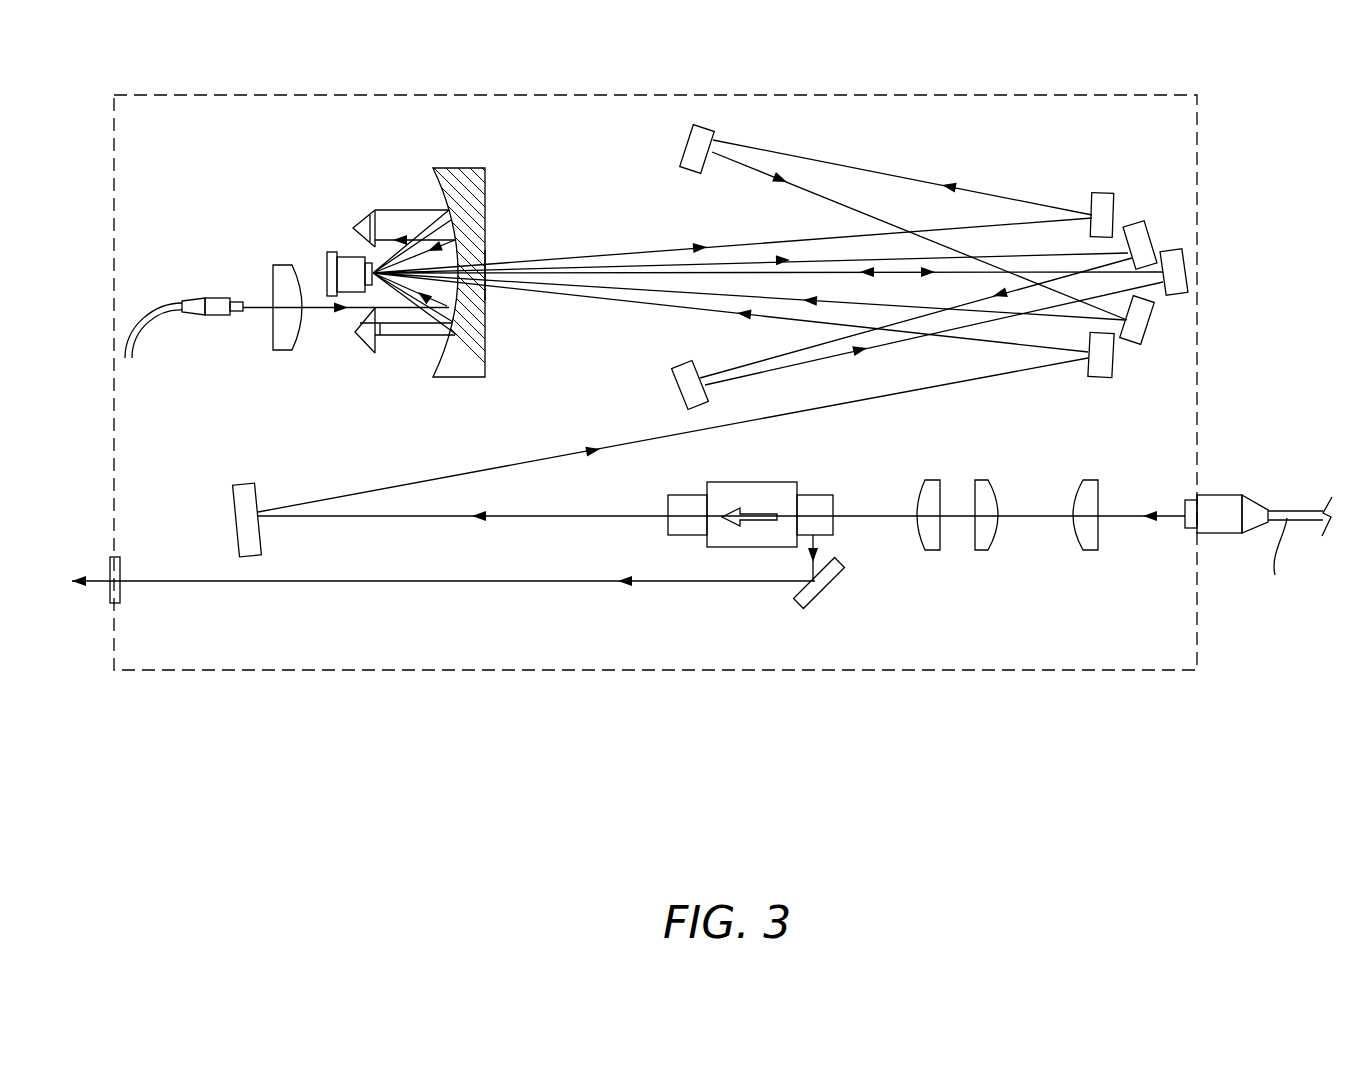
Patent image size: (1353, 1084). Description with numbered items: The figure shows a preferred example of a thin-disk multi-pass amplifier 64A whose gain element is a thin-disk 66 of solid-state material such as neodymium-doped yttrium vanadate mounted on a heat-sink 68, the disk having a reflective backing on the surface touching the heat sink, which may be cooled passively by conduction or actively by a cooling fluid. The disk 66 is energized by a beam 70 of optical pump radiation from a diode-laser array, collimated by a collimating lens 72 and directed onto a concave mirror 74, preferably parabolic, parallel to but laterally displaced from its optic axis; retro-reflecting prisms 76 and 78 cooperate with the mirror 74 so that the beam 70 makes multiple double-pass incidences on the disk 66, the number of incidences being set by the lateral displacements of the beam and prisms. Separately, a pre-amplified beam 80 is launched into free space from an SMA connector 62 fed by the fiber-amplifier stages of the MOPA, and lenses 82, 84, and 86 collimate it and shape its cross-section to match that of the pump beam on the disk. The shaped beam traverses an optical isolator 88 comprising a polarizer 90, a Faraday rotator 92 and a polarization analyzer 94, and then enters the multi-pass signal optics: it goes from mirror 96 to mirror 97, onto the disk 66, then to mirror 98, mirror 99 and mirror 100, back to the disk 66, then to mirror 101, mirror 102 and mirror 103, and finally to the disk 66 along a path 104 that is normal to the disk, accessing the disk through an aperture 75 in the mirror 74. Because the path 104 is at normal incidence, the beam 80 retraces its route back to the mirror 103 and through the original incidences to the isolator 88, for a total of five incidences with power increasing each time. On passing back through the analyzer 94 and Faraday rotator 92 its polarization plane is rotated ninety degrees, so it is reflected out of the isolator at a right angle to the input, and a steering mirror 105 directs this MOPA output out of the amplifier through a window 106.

The SMA connector 62 is at (1222, 498).
The multi-pass amplifier 64A is at (888, 676).
The thin-disk 66 is at (352, 257).
The heat-sink 68 is at (343, 278).
The beam of optical pump radiation 70 is at (257, 303).
The collimating lens 72 is at (282, 349).
The concave mirror 74 is at (437, 198).
The aperture 75 is at (480, 300).
The retro-reflecting prism 76 is at (363, 212).
The retro-reflecting prism 78 is at (370, 353).
The pre-amplified beam 80 is at (590, 515).
The lens 82 is at (1088, 545).
The lens 84 is at (985, 542).
The lens 86 is at (925, 542).
The optical isolator 88 is at (755, 487).
The polarizer 90 is at (822, 496).
The Faraday rotator 92 is at (765, 482).
The polarization analyzer 94 is at (688, 495).
The mirror 96 is at (260, 496).
The mirror 97 is at (1090, 360).
The mirror 98 is at (1113, 205).
The mirror 99 is at (713, 138).
The mirror 100 is at (1134, 338).
The mirror 101 is at (1147, 230).
The mirror 102 is at (683, 367).
The mirror 103 is at (1187, 272).
The path 104 is at (752, 270).
The steering mirror 105 is at (830, 602).
The window 106 is at (119, 590).